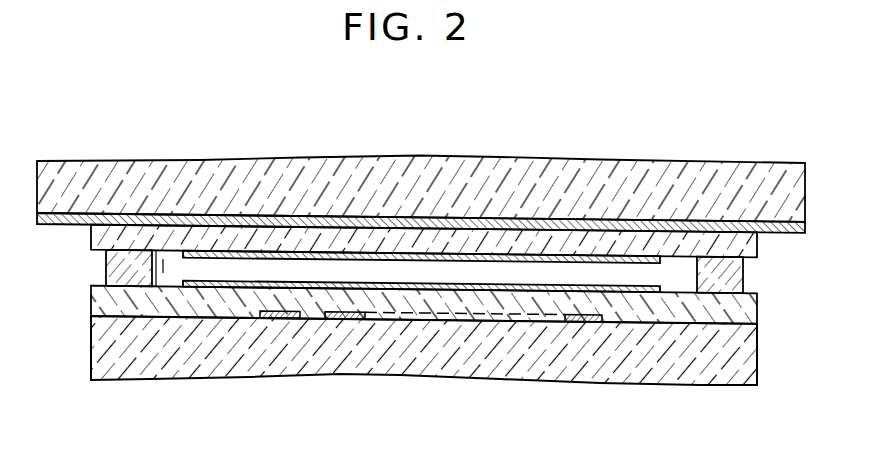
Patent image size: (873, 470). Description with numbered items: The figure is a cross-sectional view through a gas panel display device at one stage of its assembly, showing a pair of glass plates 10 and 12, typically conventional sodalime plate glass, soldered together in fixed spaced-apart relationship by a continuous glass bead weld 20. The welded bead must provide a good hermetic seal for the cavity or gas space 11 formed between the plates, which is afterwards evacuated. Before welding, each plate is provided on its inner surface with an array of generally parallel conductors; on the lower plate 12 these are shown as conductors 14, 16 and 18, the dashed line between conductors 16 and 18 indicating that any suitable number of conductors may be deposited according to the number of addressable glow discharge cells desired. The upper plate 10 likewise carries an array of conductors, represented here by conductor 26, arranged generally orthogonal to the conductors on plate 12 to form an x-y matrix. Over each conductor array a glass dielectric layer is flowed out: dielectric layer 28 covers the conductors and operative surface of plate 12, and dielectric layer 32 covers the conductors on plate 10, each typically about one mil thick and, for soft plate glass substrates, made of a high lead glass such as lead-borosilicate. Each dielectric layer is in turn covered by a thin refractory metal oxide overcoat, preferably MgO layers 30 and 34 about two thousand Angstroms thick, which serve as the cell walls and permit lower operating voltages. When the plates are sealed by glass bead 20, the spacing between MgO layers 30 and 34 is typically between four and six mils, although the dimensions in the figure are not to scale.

The glass plate 10 is at (138, 168).
The conductor 26 is at (68, 227).
The dielectric layer 32 is at (532, 236).
The metal oxide overcoat layer 34 is at (384, 258).
The gas space 11 is at (178, 267).
The glass bead weld 20 is at (742, 274).
The metal oxide overcoat layer 30 is at (383, 289).
The dielectric layer 28 is at (745, 305).
The glass plate 12 is at (95, 367).
The conductor 14 is at (273, 319).
The conductor 16 is at (347, 319).
The conductor 18 is at (585, 322).